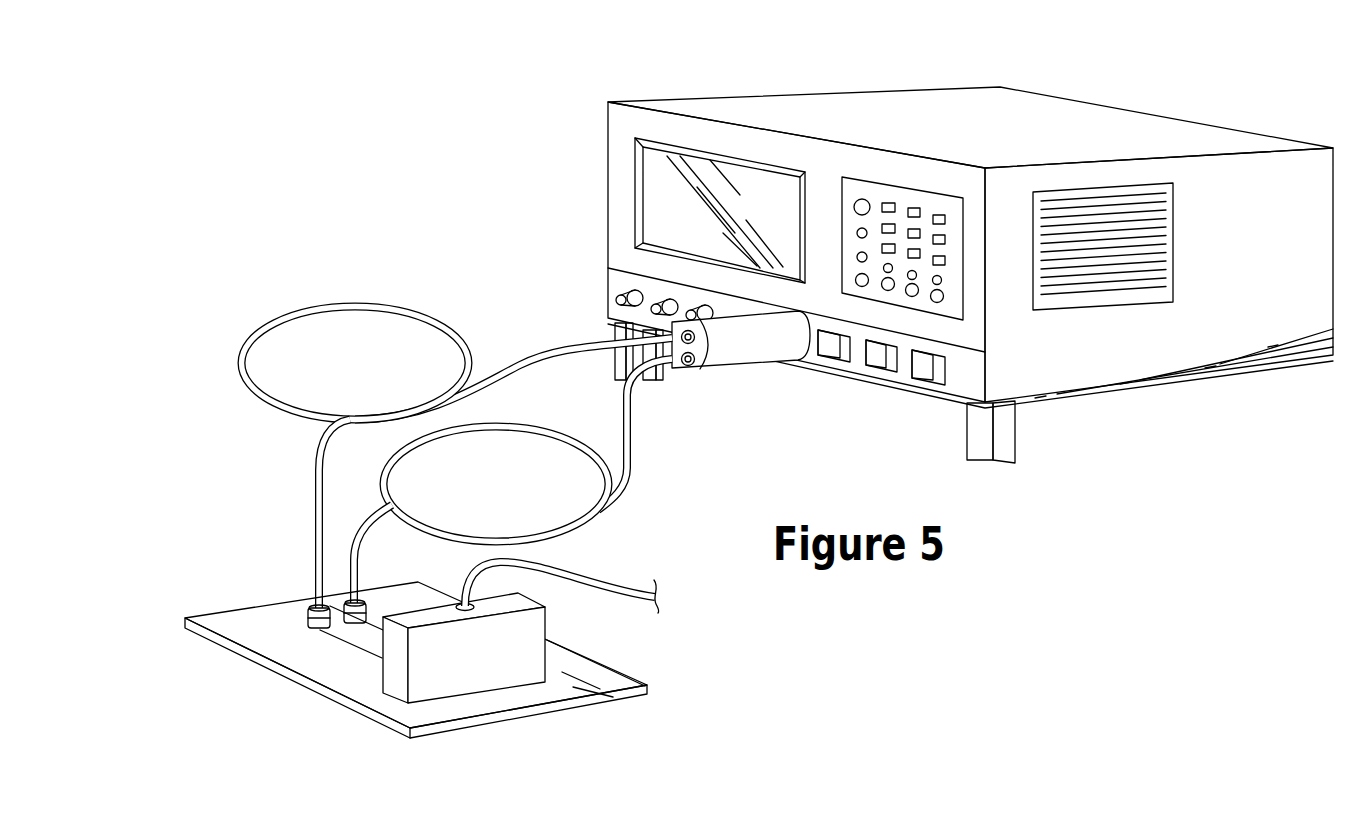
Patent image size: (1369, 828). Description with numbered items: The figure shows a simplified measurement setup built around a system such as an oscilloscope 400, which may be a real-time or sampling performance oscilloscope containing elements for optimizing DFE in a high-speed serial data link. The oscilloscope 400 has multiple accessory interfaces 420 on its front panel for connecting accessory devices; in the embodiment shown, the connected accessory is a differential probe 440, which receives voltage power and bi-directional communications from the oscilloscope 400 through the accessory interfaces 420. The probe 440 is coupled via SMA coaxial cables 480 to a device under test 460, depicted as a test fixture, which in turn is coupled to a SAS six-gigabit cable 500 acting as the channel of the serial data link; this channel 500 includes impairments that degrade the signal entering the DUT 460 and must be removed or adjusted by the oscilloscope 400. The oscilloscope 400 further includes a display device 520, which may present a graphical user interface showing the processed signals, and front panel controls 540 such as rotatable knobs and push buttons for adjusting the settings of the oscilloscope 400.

The oscilloscope 400 is at (940, 256).
The accessory interfaces 420 is at (925, 385).
The differential probe 440 is at (754, 370).
The device under test 460 is at (250, 603).
The SMA coaxial cables 480 is at (237, 362).
The SAS 6 G cable 500 is at (619, 594).
The display device 520 is at (657, 201).
The front panel controls 540 is at (921, 190).